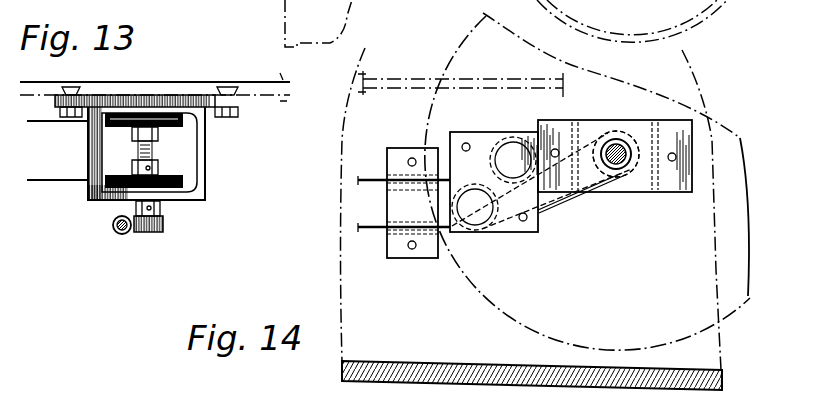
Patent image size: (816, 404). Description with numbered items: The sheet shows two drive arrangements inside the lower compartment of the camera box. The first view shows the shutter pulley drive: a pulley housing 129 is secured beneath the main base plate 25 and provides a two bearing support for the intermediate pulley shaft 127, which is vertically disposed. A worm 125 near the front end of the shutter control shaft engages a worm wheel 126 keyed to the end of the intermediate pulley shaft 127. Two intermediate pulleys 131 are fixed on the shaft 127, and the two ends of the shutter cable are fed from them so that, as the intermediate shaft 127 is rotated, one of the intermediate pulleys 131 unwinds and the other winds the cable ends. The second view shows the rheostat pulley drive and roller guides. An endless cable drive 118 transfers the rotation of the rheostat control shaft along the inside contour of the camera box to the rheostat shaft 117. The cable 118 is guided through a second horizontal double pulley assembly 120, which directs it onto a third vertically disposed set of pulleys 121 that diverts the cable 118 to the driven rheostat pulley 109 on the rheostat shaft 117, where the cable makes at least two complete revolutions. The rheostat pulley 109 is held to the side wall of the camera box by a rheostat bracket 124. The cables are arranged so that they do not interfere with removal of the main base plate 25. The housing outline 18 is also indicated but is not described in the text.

In FIG. 13, the main base plate 25 is at (279, 73).
In FIG. 14, the main base plate 25 is at (413, 84).
In FIG. 13, the pulley housing 129 is at (203, 141).
In FIG. 13, the intermediate pulleys 131 is at (123, 171).
In FIG. 13, the intermediate pulley shaft 127 is at (153, 156).
In FIG. 13, the worm wheel 126 is at (163, 224).
In FIG. 13, the worm 125 is at (121, 235).
In FIG. 14, the wheel housing 18 is at (526, 328).
In FIG. 14, the rheostat pulley 109 is at (613, 101).
In FIG. 14, the rheostat shaft 117 is at (617, 168).
In FIG. 14, the endless cable drive 118 is at (565, 204).
In FIG. 14, the second horizontal double pulley assembly 120 is at (396, 271).
In FIG. 14, the third vertically disposed set of pulleys 121 is at (515, 243).
In FIG. 14, the rheostat bracket 124 is at (667, 183).